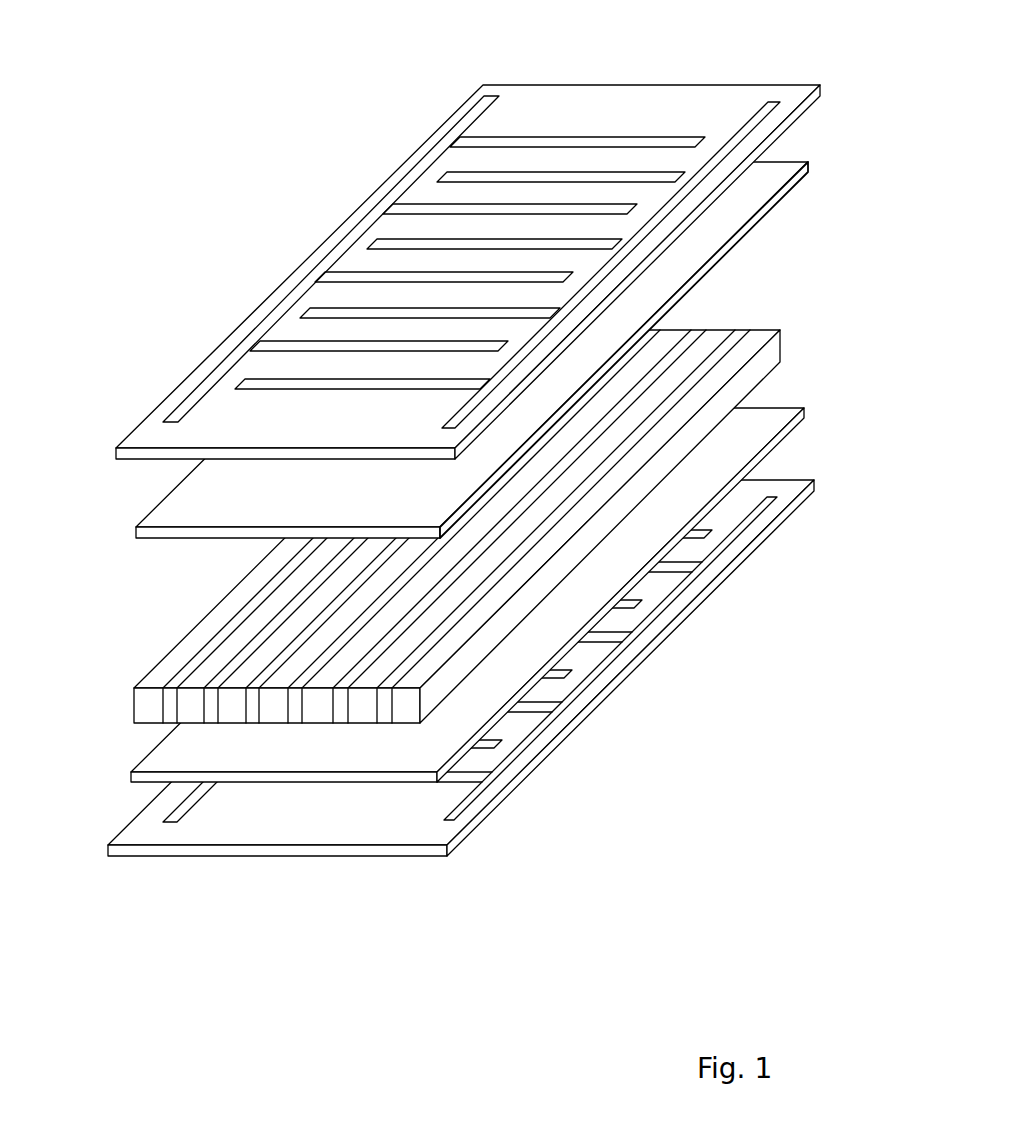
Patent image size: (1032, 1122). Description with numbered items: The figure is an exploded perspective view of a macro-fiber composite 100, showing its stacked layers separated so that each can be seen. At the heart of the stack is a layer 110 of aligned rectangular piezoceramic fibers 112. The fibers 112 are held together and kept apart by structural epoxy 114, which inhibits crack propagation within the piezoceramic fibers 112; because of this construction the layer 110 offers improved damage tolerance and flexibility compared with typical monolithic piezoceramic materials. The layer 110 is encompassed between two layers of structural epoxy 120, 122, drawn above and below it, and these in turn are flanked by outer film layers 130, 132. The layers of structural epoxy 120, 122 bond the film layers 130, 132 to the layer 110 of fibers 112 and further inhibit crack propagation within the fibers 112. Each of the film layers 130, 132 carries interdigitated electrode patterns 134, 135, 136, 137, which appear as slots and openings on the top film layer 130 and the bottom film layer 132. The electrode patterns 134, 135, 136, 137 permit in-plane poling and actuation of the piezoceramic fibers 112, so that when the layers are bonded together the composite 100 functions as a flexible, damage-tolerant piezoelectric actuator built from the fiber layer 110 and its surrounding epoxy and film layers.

The macro-fiber composite 100 is at (483, 496).
The layer of aligned rectangular piezoceramic fibers 110 is at (469, 481).
The piezoceramic fibers 112 is at (717, 338).
The structural epoxy 114 is at (218, 687).
The layer of structural epoxy 120 is at (780, 172).
The layer of structural epoxy 122 is at (675, 508).
The film layer 130 is at (468, 243).
The film layer 132 is at (461, 733).
The interdigitated electrode pattern 134 is at (392, 203).
The interdigitated electrode pattern 135 is at (720, 153).
The interdigitated electrode pattern 136 is at (192, 806).
The interdigitated electrode pattern 137 is at (557, 706).